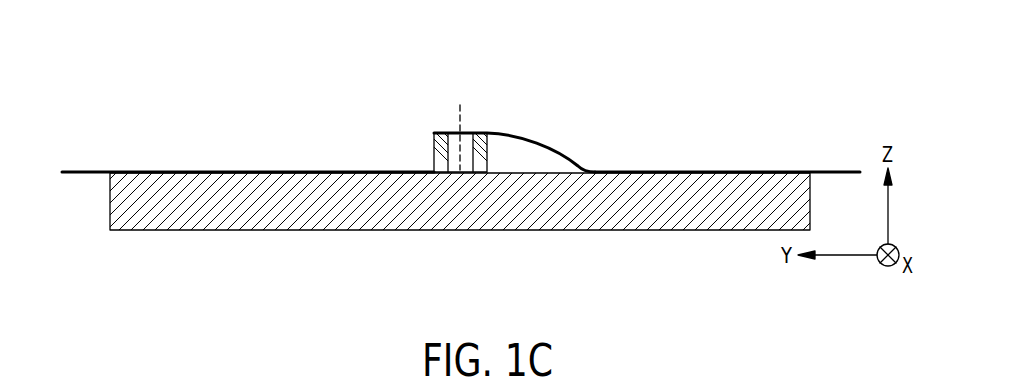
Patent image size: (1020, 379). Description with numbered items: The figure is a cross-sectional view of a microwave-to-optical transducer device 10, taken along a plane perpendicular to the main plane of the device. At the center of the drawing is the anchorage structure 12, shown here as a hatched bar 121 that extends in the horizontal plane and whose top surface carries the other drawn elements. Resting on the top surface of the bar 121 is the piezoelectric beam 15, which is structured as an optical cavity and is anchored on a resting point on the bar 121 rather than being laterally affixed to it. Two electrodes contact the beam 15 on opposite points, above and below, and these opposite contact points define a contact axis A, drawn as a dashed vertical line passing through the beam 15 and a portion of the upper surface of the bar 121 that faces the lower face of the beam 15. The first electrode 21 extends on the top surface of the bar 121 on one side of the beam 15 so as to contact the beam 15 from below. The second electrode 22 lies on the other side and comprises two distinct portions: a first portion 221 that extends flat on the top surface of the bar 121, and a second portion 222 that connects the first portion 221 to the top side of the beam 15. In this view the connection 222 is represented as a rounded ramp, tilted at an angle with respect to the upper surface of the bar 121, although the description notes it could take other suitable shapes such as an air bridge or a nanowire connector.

The microwave-to-optical transducer device 10 is at (153, 238).
The anchorage structure 12 is at (677, 235).
The bar 121 is at (272, 223).
The first electrode 21 is at (153, 171).
The piezoelectric beam 15 is at (434, 152).
The contact axis A is at (457, 117).
The second electrode 22 is at (847, 82).
The first portion 221 is at (785, 171).
The second portion 222 is at (528, 142).